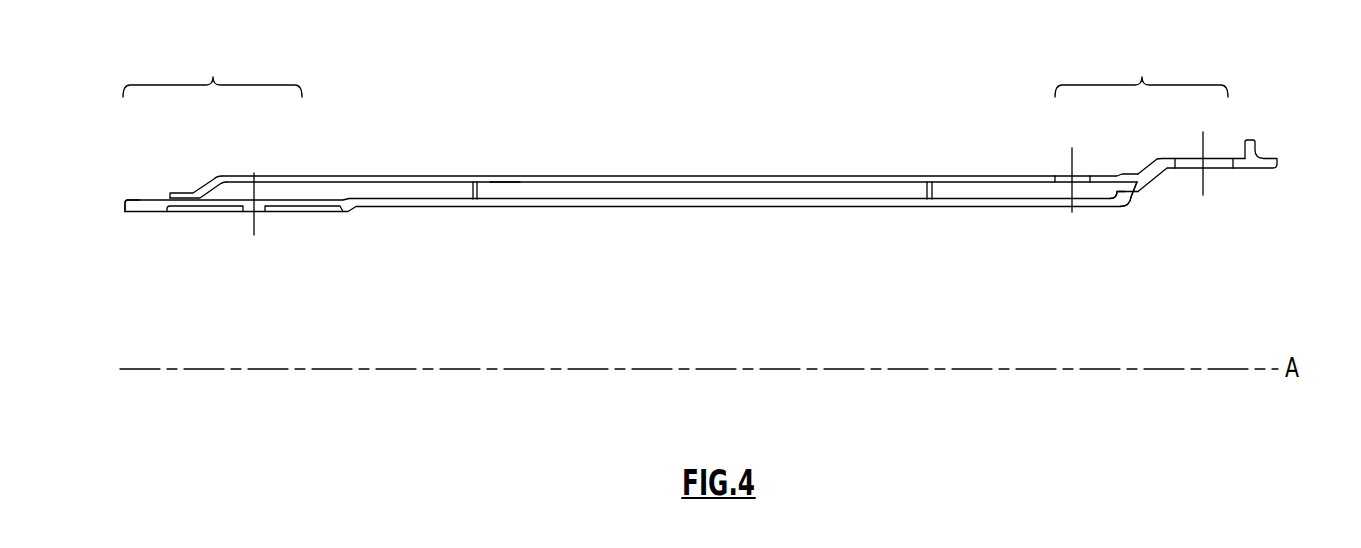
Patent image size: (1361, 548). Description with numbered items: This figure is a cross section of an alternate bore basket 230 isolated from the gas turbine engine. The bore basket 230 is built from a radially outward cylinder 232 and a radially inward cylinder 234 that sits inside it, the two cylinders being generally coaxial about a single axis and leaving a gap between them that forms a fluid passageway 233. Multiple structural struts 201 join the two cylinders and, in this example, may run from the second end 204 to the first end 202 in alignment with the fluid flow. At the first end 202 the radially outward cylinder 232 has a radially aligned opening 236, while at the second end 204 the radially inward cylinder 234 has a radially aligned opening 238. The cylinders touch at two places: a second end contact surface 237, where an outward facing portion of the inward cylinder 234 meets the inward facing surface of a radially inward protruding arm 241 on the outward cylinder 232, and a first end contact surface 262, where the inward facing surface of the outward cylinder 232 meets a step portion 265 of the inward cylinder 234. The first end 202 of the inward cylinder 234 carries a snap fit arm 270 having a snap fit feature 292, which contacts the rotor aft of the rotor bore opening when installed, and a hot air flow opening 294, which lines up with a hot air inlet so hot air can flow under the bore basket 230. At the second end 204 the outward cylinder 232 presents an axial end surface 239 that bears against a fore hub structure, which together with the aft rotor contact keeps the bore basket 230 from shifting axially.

The bore basket 230 is at (663, 83).
The second end 204 is at (212, 70).
The first end 202 is at (1141, 70).
The structural struts 201 is at (471, 193).
The radially outward cylinder 232 is at (705, 176).
The fluid passageway 233 is at (507, 190).
The radially inward cylinder 234 is at (423, 202).
The radially aligned opening 236 is at (1059, 178).
The second end contact surface 237 is at (185, 201).
The radially aligned opening 238 is at (260, 203).
The axial end surface 239 is at (125, 211).
The radially inward protruding arm 241 is at (208, 183).
The first end contact surface 262 is at (1132, 192).
The step portion 265 is at (1123, 207).
The snap fit arm 270 is at (1168, 169).
The snap fit feature 292 is at (1280, 163).
The hot air flow opening 294 is at (1215, 160).